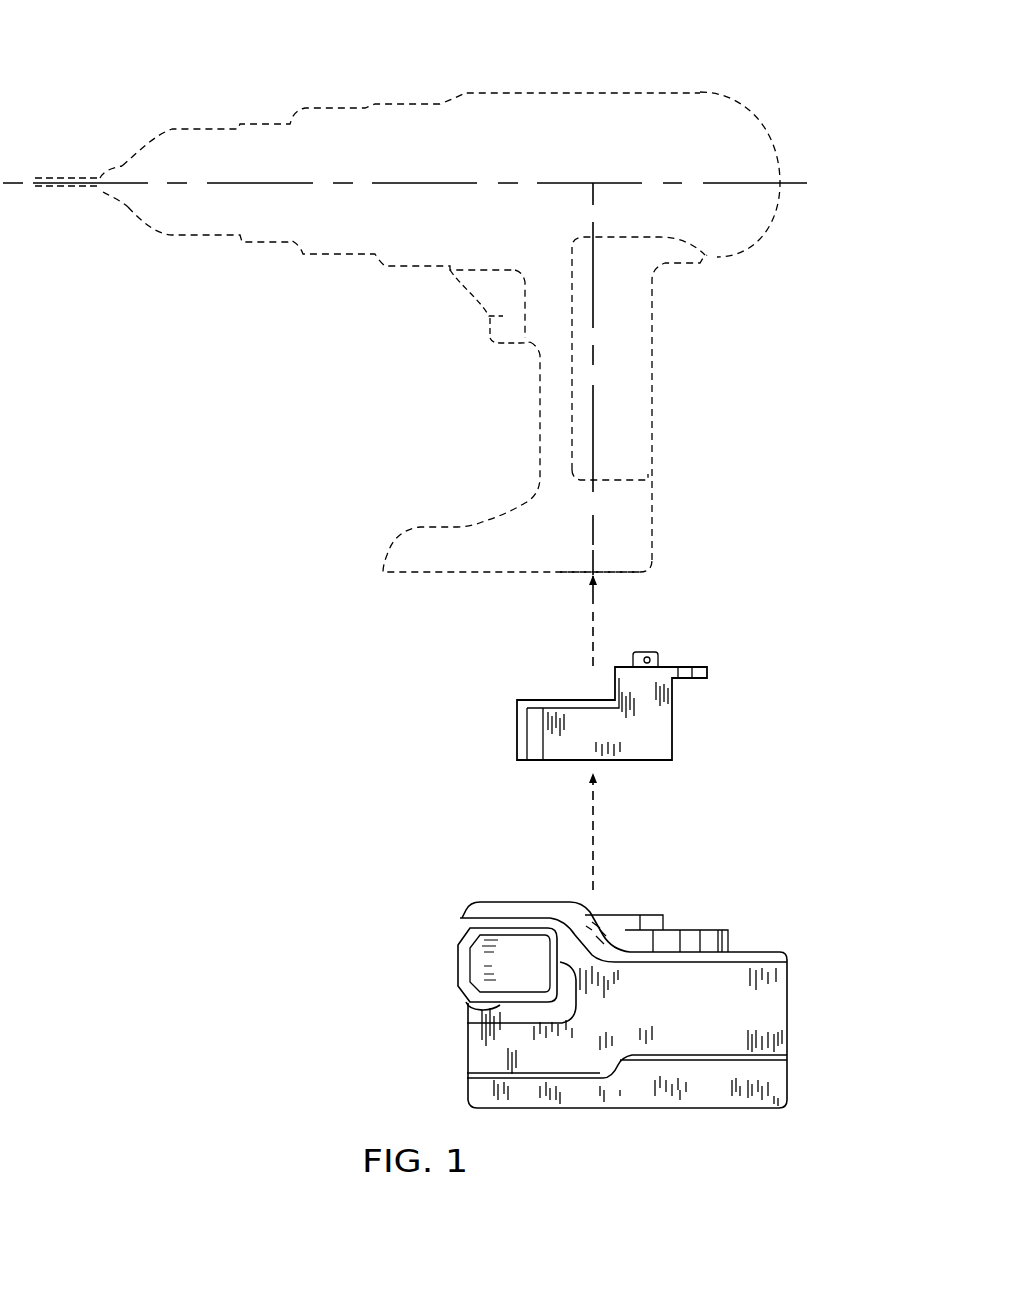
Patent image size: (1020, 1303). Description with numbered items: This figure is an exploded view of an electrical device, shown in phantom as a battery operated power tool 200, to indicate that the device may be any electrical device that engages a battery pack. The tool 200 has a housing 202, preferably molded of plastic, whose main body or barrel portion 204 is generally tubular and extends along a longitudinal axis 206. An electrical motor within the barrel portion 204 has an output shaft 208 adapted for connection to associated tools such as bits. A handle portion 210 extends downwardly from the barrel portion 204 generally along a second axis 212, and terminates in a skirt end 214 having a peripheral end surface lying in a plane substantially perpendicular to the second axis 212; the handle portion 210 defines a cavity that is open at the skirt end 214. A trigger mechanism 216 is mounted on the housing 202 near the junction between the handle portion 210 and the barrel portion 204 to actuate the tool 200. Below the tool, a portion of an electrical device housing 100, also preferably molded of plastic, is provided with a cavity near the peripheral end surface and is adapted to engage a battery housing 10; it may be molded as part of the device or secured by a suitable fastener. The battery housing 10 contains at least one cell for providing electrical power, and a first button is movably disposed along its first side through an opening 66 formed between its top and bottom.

The battery operated power tool 200 is at (258, 52).
The barrel portion 204 is at (371, 128).
The longitudinal axis 206 is at (797, 183).
The output shaft 208 is at (99, 172).
The housing 202 is at (712, 262).
The handle portion 210 is at (670, 442).
The second axis 212 is at (583, 582).
The skirt end 214 is at (488, 520).
The trigger mechanism 216 is at (500, 318).
The portion of an electrical device housing 100 is at (636, 745).
The battery housing 10 is at (560, 1088).
The opening 66 is at (498, 1005).